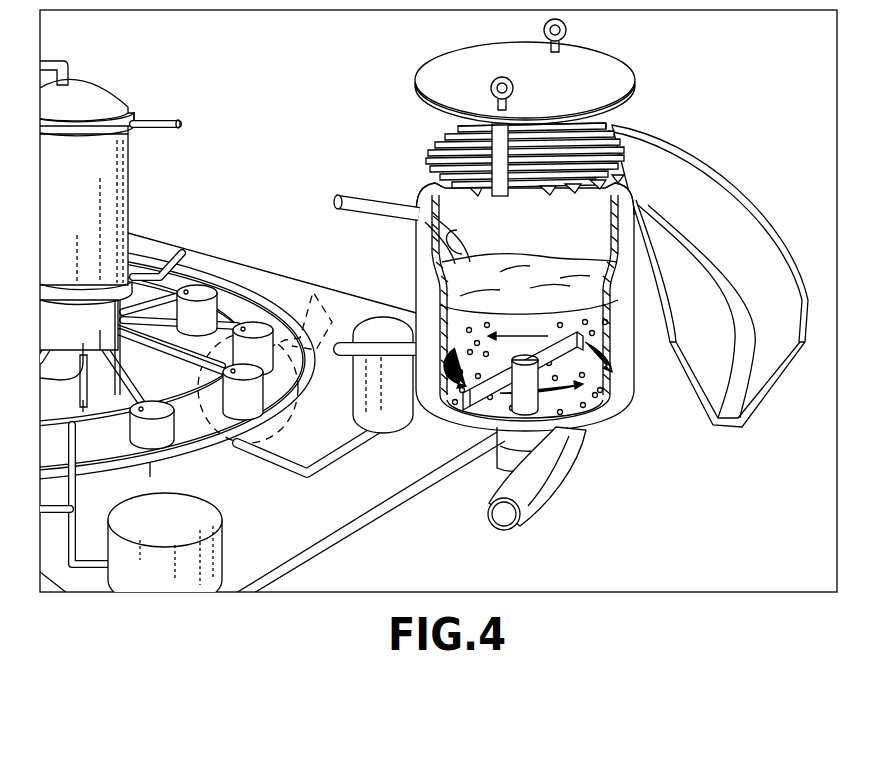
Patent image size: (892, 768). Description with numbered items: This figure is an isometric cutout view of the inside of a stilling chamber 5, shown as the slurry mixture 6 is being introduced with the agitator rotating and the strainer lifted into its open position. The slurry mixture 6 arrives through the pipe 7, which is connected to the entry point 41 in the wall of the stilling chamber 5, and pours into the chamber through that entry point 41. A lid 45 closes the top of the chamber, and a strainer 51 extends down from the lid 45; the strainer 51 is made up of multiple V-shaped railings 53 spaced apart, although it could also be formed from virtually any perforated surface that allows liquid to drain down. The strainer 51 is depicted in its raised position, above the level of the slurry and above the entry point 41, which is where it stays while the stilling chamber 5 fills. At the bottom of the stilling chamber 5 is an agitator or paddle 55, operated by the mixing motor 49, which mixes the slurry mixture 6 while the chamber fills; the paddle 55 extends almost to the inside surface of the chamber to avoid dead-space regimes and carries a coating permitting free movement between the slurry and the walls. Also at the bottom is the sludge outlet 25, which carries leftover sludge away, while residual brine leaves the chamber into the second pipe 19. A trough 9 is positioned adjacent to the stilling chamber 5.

The stilling chamber 5 is at (415, 252).
The slurry mixture 6 is at (560, 285).
The pipe 7 is at (338, 200).
The trough 9 is at (800, 265).
The second pipe 19 is at (348, 350).
The sludge outlet 25 is at (562, 492).
The entry point 41 is at (412, 192).
The lid 45 is at (618, 62).
The mixing motor 49 is at (486, 470).
The strainer 51 is at (622, 128).
The V-shaped railings 53 is at (440, 148).
The agitator or paddle 55 is at (567, 363).